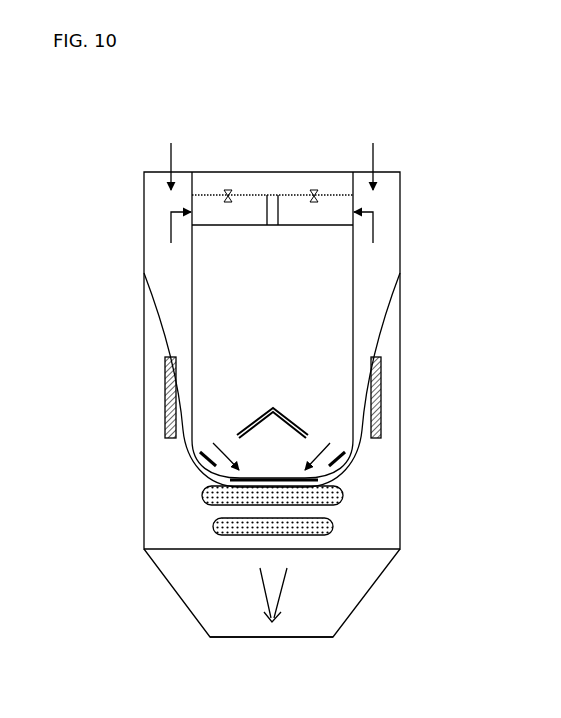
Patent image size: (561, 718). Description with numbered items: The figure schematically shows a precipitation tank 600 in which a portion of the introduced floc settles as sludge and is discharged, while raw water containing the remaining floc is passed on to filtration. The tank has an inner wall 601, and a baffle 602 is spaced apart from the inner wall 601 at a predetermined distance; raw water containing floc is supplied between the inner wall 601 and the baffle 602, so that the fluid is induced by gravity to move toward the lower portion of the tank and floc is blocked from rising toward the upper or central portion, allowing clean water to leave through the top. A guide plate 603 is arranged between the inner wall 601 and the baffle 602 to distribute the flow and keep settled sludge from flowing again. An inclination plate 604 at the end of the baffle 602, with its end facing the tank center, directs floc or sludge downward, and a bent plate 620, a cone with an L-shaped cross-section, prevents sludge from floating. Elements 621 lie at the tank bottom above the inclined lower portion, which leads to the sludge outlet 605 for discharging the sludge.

The precipitation tank 600 is at (410, 107).
The inner wall 601 is at (144, 342).
The baffle 602 is at (192, 262).
The guide plate 603 is at (170, 390).
The inclination plate 604 is at (198, 466).
The sludge outlet 605 is at (293, 641).
The bent plate 620 is at (297, 420).
The perforated plates 621 is at (333, 527).